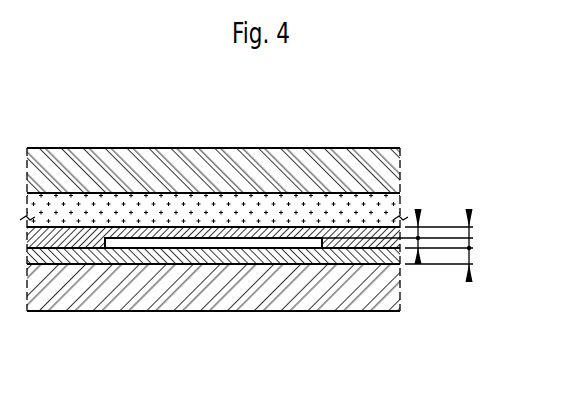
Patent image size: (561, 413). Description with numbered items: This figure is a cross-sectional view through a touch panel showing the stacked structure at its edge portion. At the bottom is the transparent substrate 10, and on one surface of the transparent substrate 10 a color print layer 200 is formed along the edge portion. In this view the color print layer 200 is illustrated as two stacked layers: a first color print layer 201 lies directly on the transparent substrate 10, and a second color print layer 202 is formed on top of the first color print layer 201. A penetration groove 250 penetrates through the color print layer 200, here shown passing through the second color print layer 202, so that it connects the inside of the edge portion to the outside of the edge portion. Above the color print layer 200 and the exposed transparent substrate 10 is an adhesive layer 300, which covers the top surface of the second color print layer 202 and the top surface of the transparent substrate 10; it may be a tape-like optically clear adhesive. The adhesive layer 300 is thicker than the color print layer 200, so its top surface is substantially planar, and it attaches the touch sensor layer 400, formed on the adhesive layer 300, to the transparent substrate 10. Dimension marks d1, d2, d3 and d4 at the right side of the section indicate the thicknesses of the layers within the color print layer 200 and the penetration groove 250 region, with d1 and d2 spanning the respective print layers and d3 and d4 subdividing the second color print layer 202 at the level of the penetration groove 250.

The transparent substrate 10 is at (105, 298).
The color print layer 200 is at (213, 313).
The first color print layer 201 is at (252, 257).
The second color print layer 202 is at (271, 229).
The penetration groove 250 is at (184, 243).
The adhesive layer 300 is at (252, 208).
The touch sensor layer 400 is at (167, 157).
The thickness of first electrode layer d1 is at (483, 264).
The thickness of second electrode layer d2 is at (483, 229).
The thickness of lower portion of second electrode layer d3 is at (418, 248).
The thickness of upper portion of second electrode layer d4 is at (418, 236).